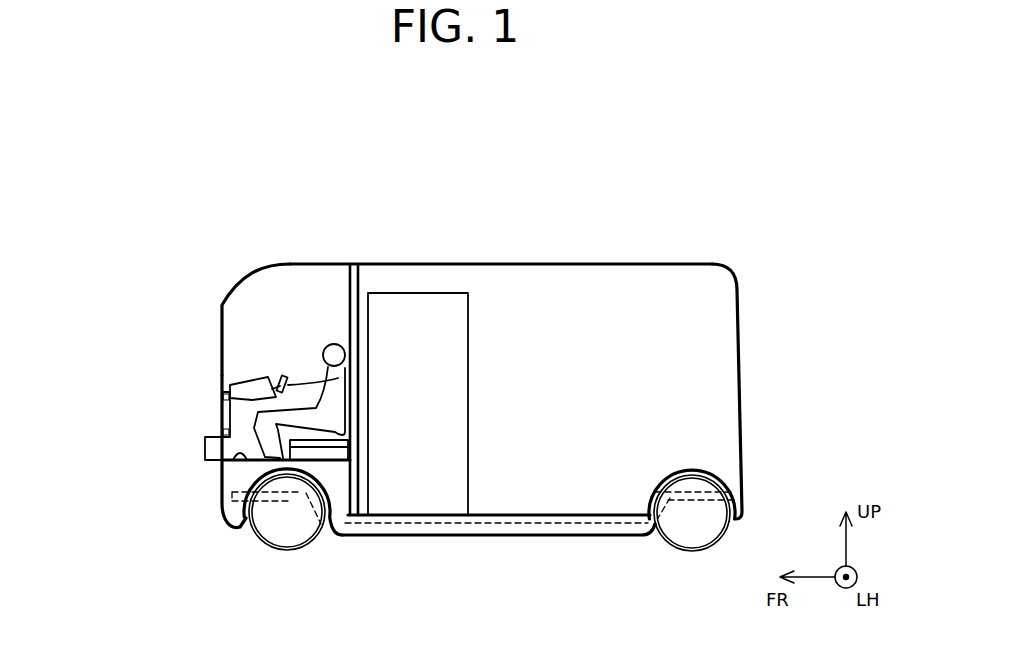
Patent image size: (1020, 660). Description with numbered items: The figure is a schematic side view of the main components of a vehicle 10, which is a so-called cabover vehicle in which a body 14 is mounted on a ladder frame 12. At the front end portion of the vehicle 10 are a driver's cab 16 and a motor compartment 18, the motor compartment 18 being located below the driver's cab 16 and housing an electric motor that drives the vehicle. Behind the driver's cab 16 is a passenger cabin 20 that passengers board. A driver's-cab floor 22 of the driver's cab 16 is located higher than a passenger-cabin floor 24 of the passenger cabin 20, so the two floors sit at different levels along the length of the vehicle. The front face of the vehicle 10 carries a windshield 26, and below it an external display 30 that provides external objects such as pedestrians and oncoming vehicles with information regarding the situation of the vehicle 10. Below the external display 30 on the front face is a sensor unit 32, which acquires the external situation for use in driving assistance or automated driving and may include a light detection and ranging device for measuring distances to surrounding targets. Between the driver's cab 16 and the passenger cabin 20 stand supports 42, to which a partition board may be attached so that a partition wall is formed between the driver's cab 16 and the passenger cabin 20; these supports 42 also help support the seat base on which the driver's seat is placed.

The vehicle 10 is at (583, 213).
The ladder frame 12 is at (498, 532).
The body 14 is at (512, 264).
The driver's cab 16 is at (294, 292).
The motor compartment 18 is at (240, 508).
The passenger cabin 20 is at (688, 293).
The driver's-cab floor 22 is at (232, 460).
The passenger-cabin floor 24 is at (550, 515).
The windshield 26 is at (222, 332).
The external display 30 is at (220, 410).
The sensor unit 32 is at (205, 445).
The supports 42 is at (358, 283).